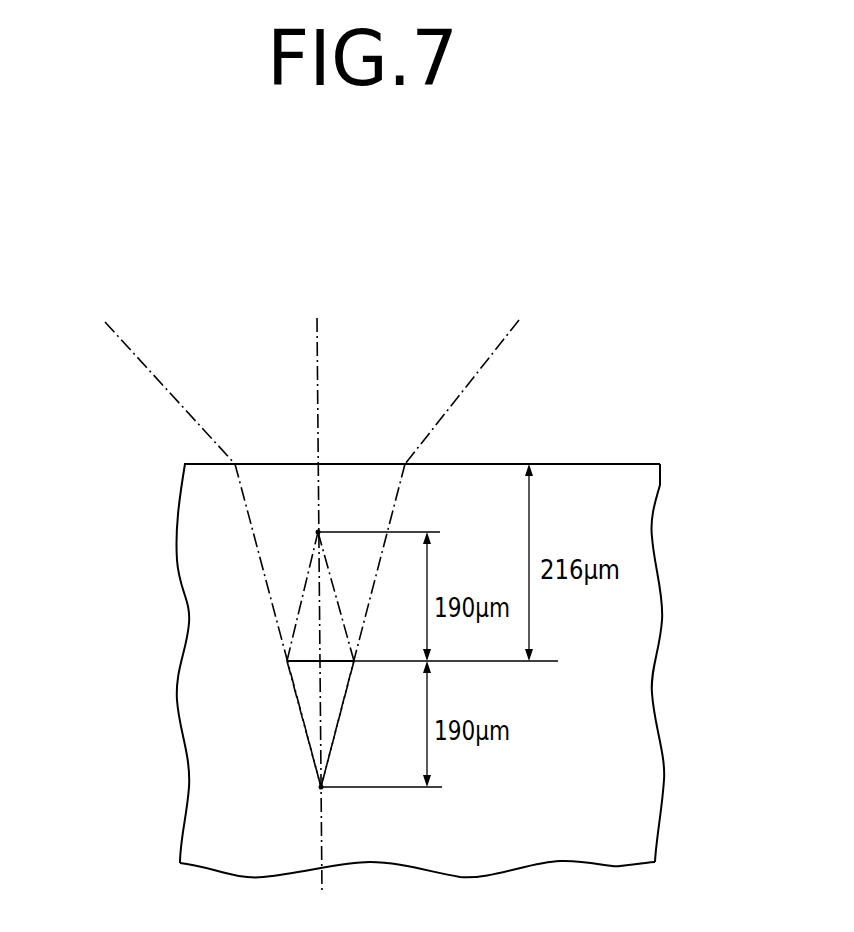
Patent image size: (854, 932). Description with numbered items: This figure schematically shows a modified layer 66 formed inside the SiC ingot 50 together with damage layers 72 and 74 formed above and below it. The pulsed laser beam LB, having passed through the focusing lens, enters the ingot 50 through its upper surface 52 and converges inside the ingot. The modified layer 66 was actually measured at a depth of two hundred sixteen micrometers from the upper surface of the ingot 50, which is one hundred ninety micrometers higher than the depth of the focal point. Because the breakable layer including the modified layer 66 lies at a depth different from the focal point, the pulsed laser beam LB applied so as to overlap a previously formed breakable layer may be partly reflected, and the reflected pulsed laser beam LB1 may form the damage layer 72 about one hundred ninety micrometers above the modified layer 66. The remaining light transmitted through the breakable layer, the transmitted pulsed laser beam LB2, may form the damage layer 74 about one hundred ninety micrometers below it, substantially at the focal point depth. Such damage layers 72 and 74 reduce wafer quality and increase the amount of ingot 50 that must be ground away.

The ingot 50 is at (625, 461).
The upper surface of workpiece 52 is at (555, 463).
The pulsed laser beam LB is at (160, 378).
The damage layer 72 is at (318, 533).
The reflected pulsed laser beam LB1 is at (297, 617).
The modified layer 66 is at (300, 662).
The transmitted pulsed laser beam LB2 is at (303, 720).
The damage layer 74 is at (321, 787).